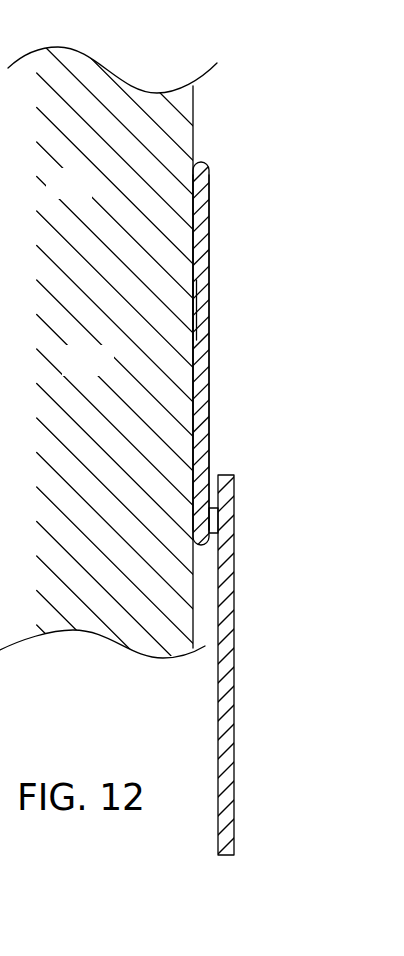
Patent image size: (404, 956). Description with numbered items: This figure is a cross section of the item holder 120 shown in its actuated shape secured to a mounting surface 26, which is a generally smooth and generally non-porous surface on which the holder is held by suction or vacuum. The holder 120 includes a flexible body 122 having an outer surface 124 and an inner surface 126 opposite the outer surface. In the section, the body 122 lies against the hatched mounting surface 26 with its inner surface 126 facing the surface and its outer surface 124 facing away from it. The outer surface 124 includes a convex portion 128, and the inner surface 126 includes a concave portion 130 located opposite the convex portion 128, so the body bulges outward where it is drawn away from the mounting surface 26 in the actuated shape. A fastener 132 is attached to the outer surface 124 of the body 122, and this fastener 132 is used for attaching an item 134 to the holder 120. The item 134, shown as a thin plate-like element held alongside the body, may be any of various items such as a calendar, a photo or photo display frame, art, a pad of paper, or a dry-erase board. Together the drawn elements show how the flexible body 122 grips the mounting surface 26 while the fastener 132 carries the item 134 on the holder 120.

The mounting surface 26 is at (212, 108).
The item holder 120 is at (223, 518).
The flexible body 122 is at (209, 168).
The outer surface 124 is at (216, 232).
The inner surface 126 is at (188, 223).
The convex portion 128 is at (197, 305).
The concave portion 130 is at (196, 307).
The fastener 132 is at (219, 523).
The item 134 is at (236, 747).